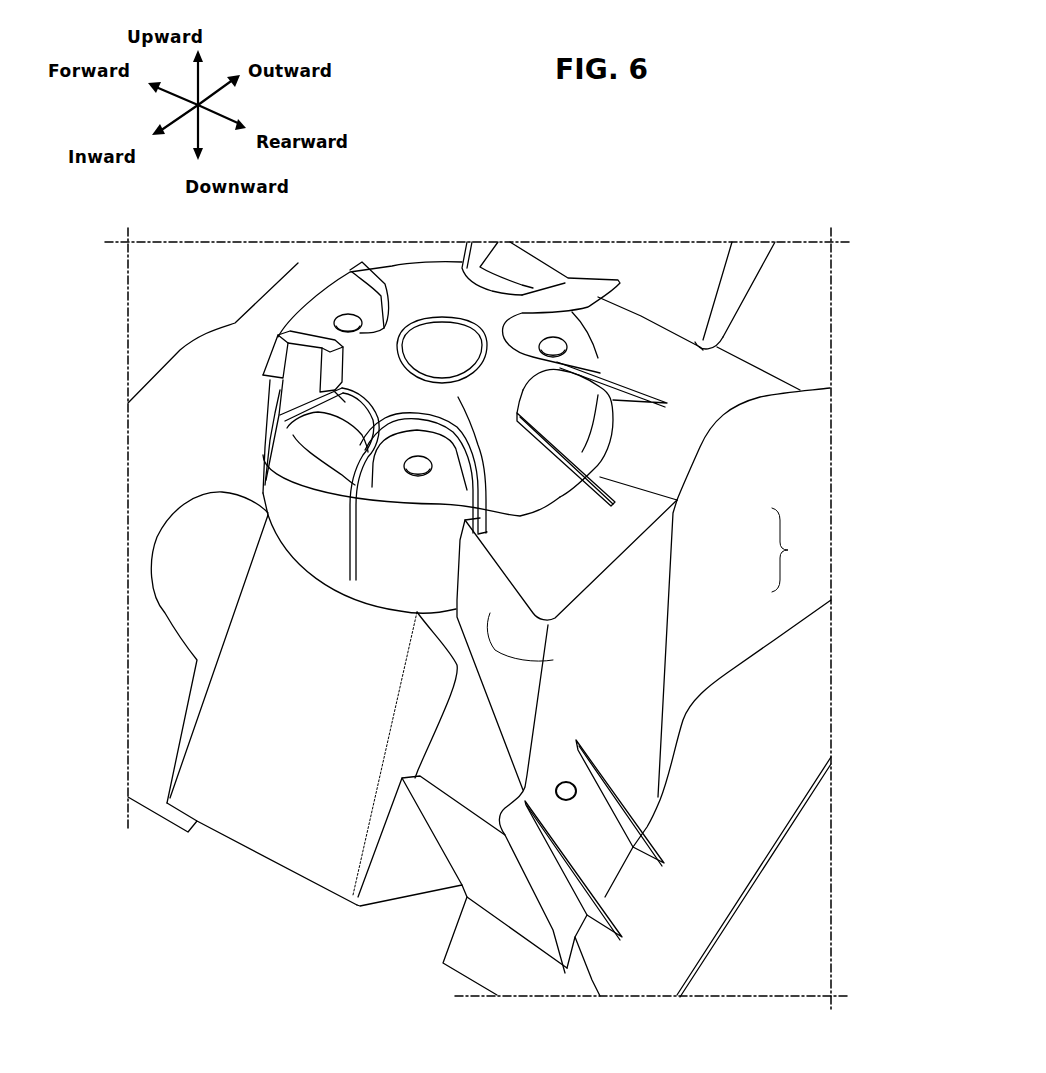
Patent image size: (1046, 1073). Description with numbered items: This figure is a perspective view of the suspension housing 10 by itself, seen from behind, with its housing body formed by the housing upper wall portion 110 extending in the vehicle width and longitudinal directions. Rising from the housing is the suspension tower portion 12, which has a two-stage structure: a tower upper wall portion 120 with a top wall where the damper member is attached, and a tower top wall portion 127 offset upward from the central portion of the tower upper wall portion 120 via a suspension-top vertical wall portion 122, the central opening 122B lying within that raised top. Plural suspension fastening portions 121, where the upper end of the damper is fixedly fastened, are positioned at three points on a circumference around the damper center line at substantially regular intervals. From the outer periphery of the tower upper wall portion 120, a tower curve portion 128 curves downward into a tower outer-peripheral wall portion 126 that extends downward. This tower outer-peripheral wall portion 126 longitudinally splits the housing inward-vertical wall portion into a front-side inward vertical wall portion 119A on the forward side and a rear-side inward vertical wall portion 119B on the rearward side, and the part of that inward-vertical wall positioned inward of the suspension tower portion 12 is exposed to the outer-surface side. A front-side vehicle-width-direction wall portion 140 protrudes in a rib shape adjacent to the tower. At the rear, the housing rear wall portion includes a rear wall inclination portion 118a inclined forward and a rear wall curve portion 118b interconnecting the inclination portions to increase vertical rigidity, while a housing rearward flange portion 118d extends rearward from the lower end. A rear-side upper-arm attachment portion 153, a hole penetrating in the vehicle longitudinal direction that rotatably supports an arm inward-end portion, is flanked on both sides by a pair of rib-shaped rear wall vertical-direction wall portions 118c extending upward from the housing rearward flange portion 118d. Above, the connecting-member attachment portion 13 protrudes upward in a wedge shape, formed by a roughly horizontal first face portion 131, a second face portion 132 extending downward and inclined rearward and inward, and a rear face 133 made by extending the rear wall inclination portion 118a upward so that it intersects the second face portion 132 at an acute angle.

The suspension housing 10 is at (456, 186).
The suspension tower portion 12 is at (513, 243).
The connecting-member attachment portion 13 is at (642, 736).
The housing upper wall portion 110 is at (265, 320).
The rear wall inclination portion 118a is at (632, 677).
The rear wall curve portion 118b is at (733, 450).
The rear wall vertical-direction wall portion 118c is at (663, 832).
The housing rearward flange portion 118d is at (723, 830).
The front-side inward vertical wall portion 119A is at (152, 712).
The rear-side inward vertical wall portion 119B is at (483, 887).
The tower upper wall portion 120 is at (298, 370).
The suspension fastening portion 121 is at (347, 312).
The suspension-top vertical wall portion 122 is at (352, 413).
The opening 122B is at (437, 425).
The tower outer-peripheral wall portion 126 is at (312, 768).
The tower top wall portion 127 is at (428, 300).
The tower curve portion 128 is at (292, 454).
The first face portion 131 is at (567, 555).
The second face portion 132 is at (585, 655).
The rear face 133 is at (632, 632).
The front-side vehicle-width-direction wall portion 140 is at (195, 550).
The rear-side upper-arm attachment portion 153 is at (563, 782).